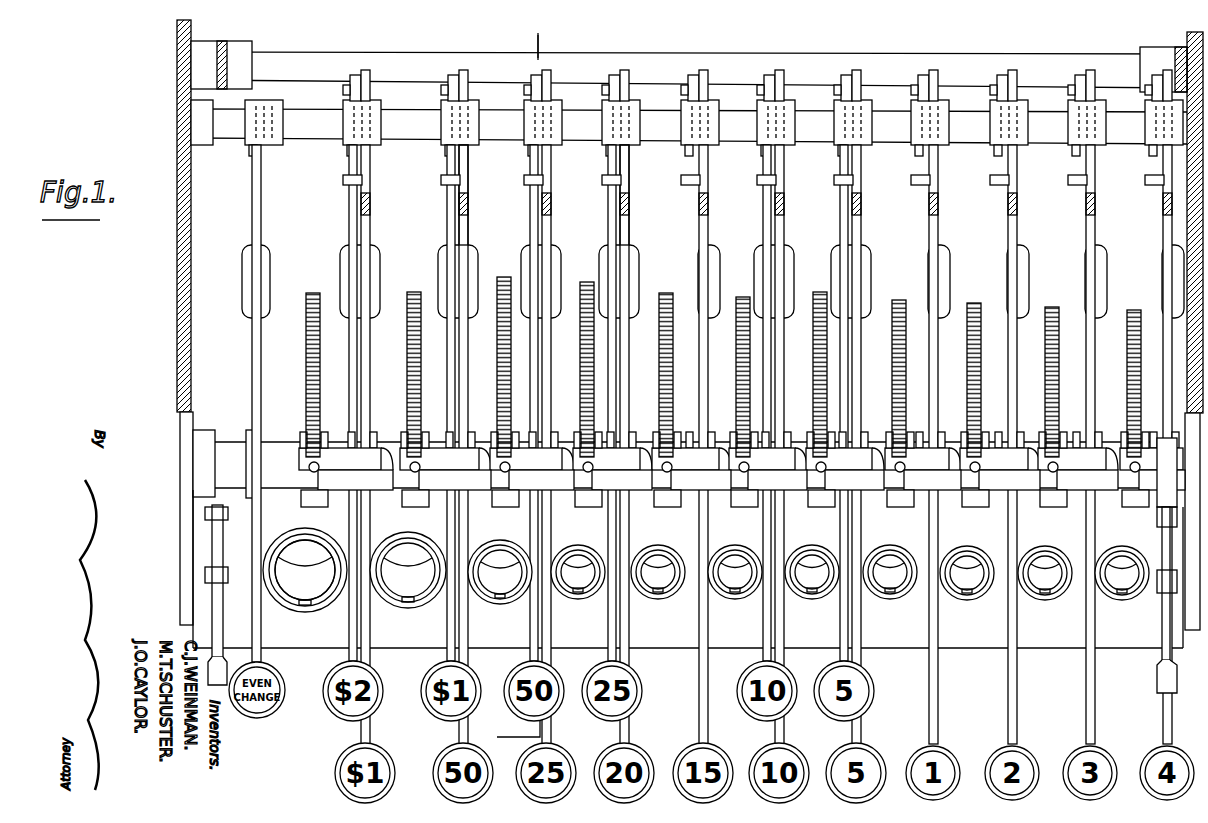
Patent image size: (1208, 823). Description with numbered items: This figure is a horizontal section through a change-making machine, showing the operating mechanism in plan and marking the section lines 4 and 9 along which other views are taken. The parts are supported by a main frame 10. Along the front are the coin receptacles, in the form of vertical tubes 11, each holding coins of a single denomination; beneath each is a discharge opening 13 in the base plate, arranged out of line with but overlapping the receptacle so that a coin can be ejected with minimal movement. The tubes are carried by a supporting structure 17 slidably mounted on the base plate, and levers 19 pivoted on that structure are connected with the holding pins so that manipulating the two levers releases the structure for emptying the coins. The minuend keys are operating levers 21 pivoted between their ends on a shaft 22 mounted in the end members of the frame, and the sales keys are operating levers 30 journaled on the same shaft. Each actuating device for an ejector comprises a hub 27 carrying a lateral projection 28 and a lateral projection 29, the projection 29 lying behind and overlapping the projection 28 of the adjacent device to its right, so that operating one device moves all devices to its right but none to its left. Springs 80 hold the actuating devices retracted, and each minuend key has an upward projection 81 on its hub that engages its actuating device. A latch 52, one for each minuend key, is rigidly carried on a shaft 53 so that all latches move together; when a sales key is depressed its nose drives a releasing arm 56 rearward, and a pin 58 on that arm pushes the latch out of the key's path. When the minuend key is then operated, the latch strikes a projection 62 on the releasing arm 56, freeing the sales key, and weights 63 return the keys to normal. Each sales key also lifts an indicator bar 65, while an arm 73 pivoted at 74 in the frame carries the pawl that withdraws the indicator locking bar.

The section line 4- 4 is at (520, 384).
The section line 9- 9 is at (518, 397).
The main frame 10 is at (192, 385).
The coin receptacle 11 is at (295, 532).
The discharge opening 13 is at (303, 572).
The supporting structure 17 is at (688, 569).
The lever 19 is at (220, 634).
The operating lever 21 is at (352, 372).
The shaft 22 is at (282, 442).
The hub 27 is at (417, 492).
The projection 28 is at (1075, 525).
The projection 29 is at (379, 455).
The operating lever 30 is at (929, 250).
The latch 52 is at (382, 140).
The shaft 53 is at (305, 138).
The releasing arm 56 is at (470, 185).
The pin 58 is at (524, 182).
The projection 62 is at (605, 75).
The weight 63 is at (603, 262).
The bar 65 is at (371, 207).
The arm 73 is at (228, 42).
The pivot 74 is at (395, 58).
The spring 80 is at (306, 348).
The projection 81 is at (452, 432).